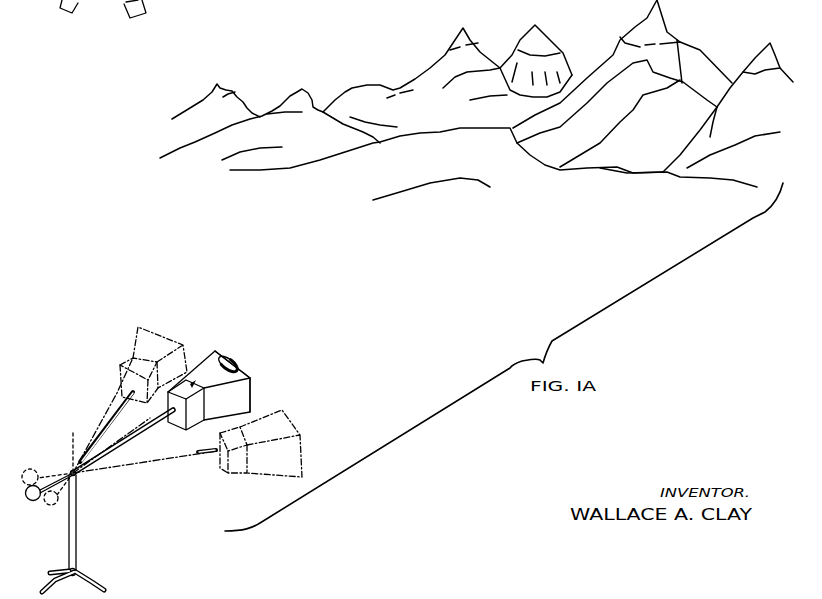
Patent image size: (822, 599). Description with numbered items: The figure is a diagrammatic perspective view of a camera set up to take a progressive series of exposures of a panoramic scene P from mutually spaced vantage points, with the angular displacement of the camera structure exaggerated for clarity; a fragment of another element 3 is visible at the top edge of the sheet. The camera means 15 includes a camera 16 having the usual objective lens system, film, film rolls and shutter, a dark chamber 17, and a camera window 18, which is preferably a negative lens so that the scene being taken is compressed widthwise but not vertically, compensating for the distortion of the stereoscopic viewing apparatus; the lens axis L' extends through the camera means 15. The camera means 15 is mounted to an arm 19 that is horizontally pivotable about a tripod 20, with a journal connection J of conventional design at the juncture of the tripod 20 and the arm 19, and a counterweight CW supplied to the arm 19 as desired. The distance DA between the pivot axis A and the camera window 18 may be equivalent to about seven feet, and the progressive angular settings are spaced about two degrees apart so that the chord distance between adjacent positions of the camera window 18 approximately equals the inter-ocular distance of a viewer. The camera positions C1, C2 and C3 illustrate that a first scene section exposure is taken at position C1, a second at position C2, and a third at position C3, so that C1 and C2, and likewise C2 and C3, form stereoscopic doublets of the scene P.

The panoramic scene P is at (468, 59).
The cut-off object from adjacent figure 3 is at (144, 6).
The first camera position C1 is at (172, 333).
The second camera position C2 is at (230, 353).
The third camera position C3 is at (294, 425).
The camera means 15 is at (203, 372).
The camera 16 is at (192, 425).
The dark chamber 17 is at (238, 402).
The camera window 18 is at (250, 375).
The arm 19 is at (118, 440).
The tripod 20 is at (77, 529).
The distance between pivot axis and camera window DA is at (103, 416).
The pivot axis A is at (71, 446).
The pivot joint J is at (78, 475).
The counterweight CW is at (33, 501).
The lens axis L' is at (208, 401).